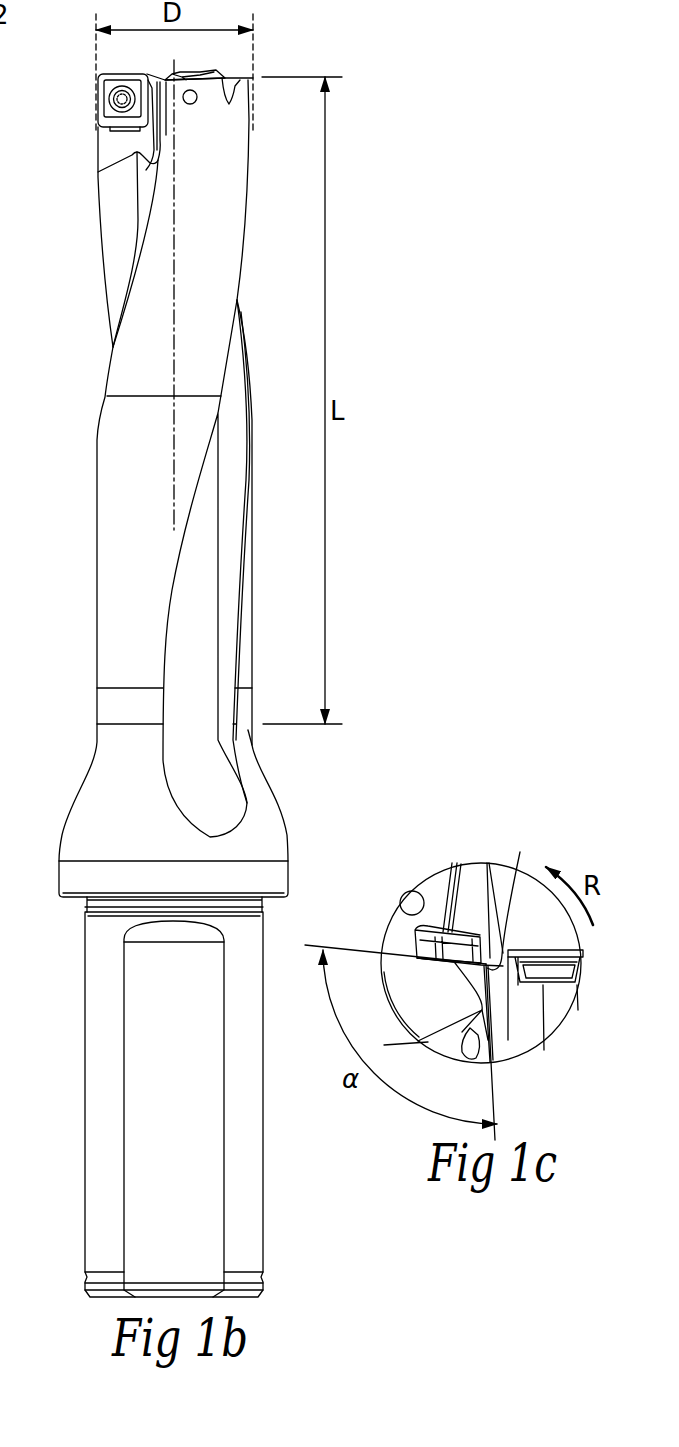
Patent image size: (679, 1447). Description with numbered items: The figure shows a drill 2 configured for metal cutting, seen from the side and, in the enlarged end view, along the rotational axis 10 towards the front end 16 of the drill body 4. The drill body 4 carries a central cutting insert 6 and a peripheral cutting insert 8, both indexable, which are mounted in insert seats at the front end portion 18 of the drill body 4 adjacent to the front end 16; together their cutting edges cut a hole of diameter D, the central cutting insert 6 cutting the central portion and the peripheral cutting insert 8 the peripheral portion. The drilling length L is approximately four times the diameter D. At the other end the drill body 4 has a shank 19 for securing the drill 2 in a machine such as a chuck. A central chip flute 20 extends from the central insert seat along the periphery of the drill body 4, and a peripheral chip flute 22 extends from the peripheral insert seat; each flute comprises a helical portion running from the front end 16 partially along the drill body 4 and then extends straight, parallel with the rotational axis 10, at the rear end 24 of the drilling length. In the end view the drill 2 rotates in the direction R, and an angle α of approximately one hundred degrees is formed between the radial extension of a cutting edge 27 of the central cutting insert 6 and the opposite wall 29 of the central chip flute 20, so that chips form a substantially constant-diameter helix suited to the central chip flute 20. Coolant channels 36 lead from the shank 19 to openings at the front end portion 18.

In FIG. 1B, the drill 2 is at (268, 72).
In FIG. 1C, the drill 2 is at (479, 845).
In FIG. 1B, the drill body 4 is at (128, 540).
In FIG. 1B, the central cutting insert 6 is at (190, 72).
In FIG. 1C, the central cutting insert 6 is at (426, 934).
In FIG. 1B, the peripheral cutting insert 8 is at (100, 96).
In FIG. 1C, the peripheral cutting insert 8 is at (583, 960).
In FIG. 1C, the rotational axis 10 is at (516, 898).
In FIG. 1C, the front end 16 is at (438, 918).
In FIG. 1B, the front end portion 18 is at (90, 150).
In FIG. 1B, the shank 19 is at (250, 1128).
In FIG. 1B, the central chip flute 20 is at (232, 476).
In FIG. 1C, the central chip flute 20 is at (438, 998).
In FIG. 1B, the peripheral chip flute 22 is at (104, 214).
In FIG. 1B, the rear end of the drilling length 24 is at (90, 713).
In FIG. 1C, the cutting edge 27 is at (430, 963).
In FIG. 1C, the opposite wall 29 is at (483, 1011).
In FIG. 1C, the coolant channel 36 is at (472, 1053).